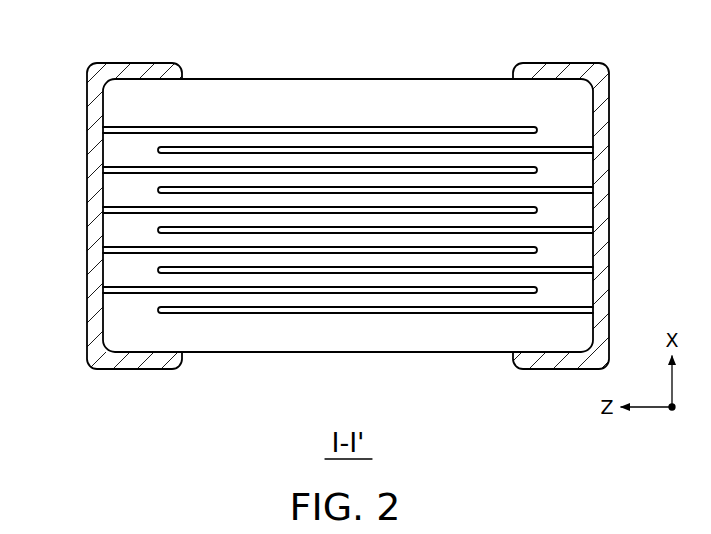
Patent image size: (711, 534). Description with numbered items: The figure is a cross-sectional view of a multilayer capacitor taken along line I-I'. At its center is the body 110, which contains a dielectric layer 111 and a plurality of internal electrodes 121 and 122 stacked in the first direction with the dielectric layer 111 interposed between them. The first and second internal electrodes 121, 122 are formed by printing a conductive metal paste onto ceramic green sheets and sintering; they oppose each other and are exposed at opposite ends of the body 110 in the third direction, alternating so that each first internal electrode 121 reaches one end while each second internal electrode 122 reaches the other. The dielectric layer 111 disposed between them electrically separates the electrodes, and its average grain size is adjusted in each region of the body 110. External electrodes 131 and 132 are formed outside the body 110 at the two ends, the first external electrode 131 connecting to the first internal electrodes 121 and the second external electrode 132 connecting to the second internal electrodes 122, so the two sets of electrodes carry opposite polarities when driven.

The body 110 is at (274, 77).
The dielectric layer 111 is at (165, 157).
The first internal electrode 121 is at (330, 127).
The second internal electrode 122 is at (387, 147).
The first external electrode 131 is at (140, 71).
The second external electrode 132 is at (558, 71).